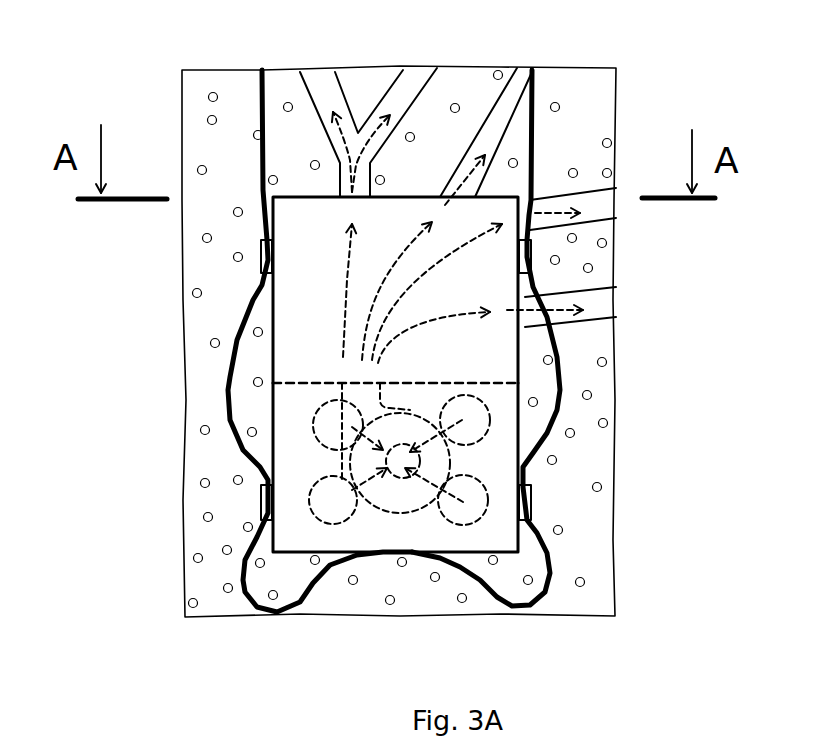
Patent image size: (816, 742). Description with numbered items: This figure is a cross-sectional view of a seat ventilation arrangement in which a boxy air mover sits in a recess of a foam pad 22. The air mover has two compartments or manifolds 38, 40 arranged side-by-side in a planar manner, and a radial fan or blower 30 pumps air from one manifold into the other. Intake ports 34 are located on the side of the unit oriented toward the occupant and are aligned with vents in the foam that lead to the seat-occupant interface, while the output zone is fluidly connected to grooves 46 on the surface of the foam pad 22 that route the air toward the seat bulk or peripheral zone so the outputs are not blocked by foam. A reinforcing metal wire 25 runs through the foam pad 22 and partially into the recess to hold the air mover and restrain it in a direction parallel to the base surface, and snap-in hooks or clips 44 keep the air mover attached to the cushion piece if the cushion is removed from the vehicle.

The foam pad 22 is at (602, 522).
The foam pad reinforcing metal wire 25 is at (560, 390).
The blower 30 is at (397, 503).
The intake ports 34 is at (320, 497).
The compartment 38 is at (297, 530).
The compartment 40 is at (293, 360).
The clips 44 is at (262, 260).
The grooves 46 is at (417, 73).